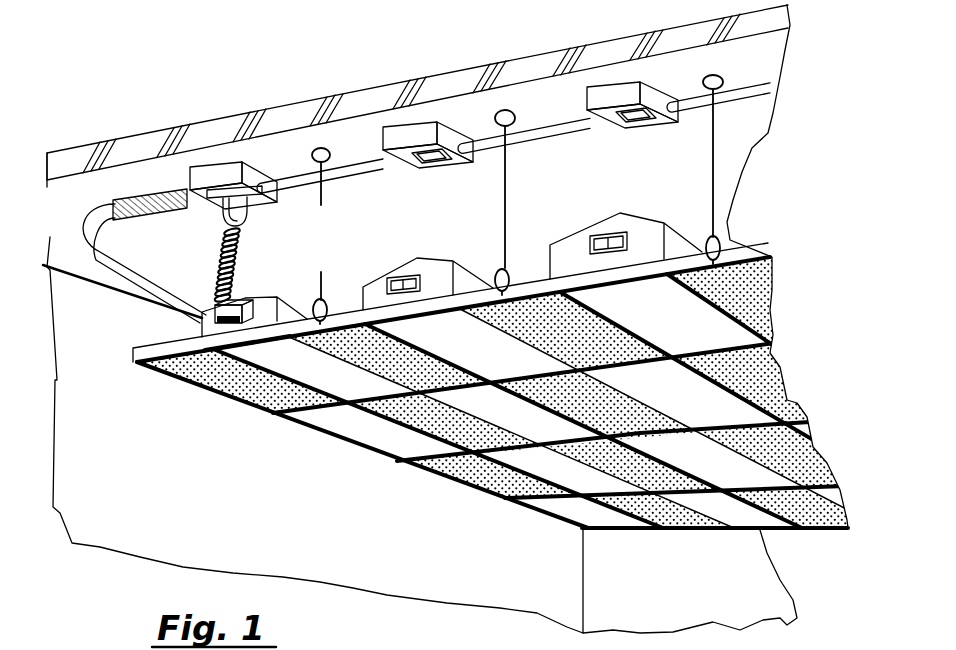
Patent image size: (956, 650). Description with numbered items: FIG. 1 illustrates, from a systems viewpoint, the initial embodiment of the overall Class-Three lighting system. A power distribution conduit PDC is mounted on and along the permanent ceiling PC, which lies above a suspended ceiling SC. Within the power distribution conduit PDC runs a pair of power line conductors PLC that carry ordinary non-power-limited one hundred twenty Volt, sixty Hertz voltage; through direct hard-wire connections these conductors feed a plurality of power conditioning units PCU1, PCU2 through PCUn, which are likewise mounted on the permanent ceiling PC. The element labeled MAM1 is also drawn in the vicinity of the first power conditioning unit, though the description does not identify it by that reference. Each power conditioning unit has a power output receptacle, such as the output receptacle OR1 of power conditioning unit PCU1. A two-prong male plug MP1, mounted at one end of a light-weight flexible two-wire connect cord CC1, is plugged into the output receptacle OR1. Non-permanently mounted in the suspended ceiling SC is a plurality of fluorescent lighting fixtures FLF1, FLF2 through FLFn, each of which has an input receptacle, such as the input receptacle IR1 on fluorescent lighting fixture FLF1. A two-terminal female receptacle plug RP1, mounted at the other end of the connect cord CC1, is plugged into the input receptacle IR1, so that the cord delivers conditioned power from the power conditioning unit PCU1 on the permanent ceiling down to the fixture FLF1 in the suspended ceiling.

The permanent ceiling PC is at (327, 86).
The power line conductors PLC is at (163, 200).
The modulator/adapter module MAM1 is at (203, 162).
The power conditioning unit PCU1 is at (247, 160).
The power distribution conduit PDC is at (93, 224).
The connect cord CC1 is at (218, 262).
The input receptacle IR1 is at (256, 304).
The fluorescent lighting fixture FLF1 is at (200, 328).
The receptacle plug RP1 is at (240, 325).
The power output receptacle OR1 is at (280, 202).
The male plug MP1 is at (247, 222).
The power conditioning unit PCU2 is at (413, 170).
The fluorescent lighting fixture FLF2 is at (383, 262).
The fluorescent lighting fixture FLFn is at (597, 213).
The power conditioning unit PCUn is at (623, 135).
The suspended ceiling SC is at (292, 447).